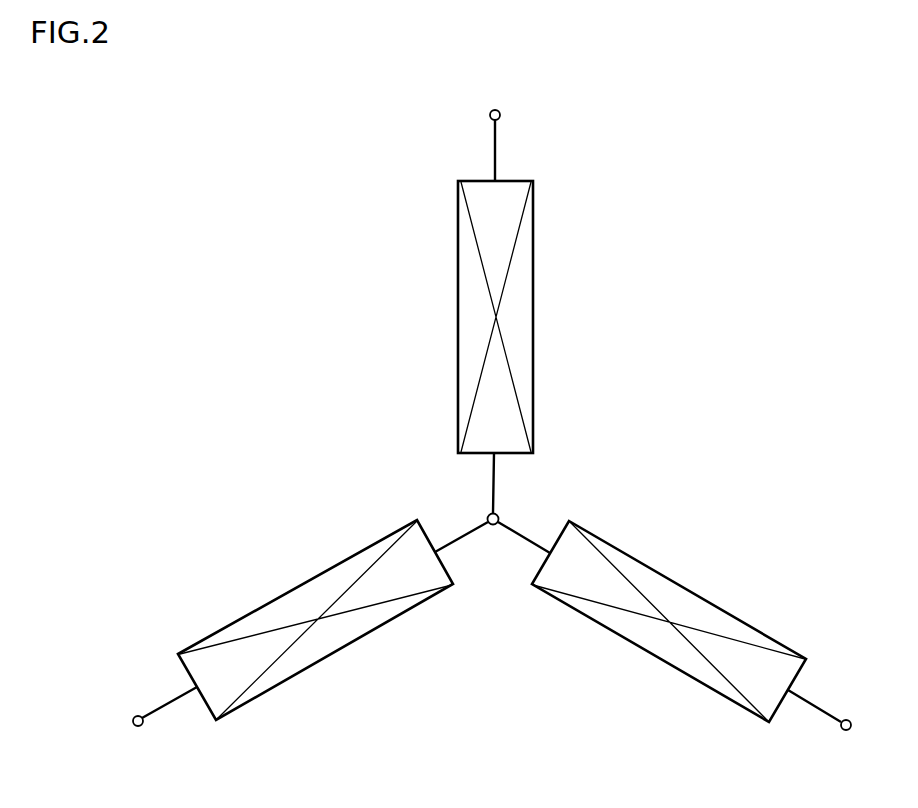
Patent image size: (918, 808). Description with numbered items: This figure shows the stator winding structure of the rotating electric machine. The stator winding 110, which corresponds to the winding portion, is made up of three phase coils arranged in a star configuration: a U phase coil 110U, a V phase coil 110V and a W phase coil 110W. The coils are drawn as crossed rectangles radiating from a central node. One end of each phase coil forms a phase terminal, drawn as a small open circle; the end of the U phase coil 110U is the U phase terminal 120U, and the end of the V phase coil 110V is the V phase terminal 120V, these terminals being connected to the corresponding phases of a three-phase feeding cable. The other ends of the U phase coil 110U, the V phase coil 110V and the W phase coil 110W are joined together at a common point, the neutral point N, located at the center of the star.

The stator winding 110 is at (353, 316).
The U phase coil 110U is at (534, 319).
The V phase coil 110V is at (334, 653).
The W phase coil 110W is at (650, 654).
The neutral point N is at (499, 515).
The U phase terminal 120U is at (493, 108).
The V phase terminal 120V is at (137, 727).